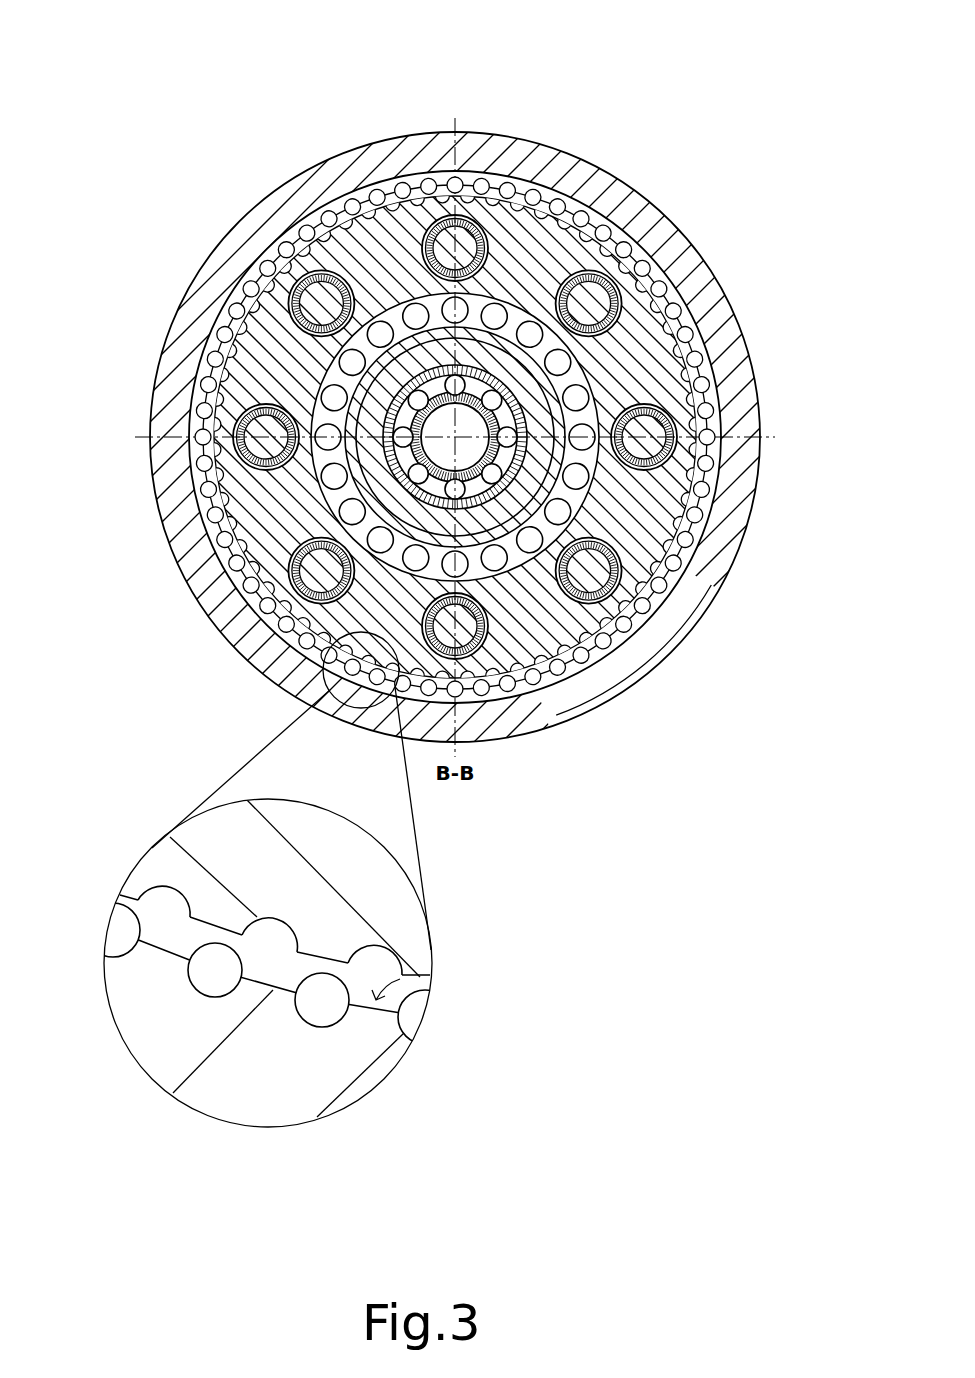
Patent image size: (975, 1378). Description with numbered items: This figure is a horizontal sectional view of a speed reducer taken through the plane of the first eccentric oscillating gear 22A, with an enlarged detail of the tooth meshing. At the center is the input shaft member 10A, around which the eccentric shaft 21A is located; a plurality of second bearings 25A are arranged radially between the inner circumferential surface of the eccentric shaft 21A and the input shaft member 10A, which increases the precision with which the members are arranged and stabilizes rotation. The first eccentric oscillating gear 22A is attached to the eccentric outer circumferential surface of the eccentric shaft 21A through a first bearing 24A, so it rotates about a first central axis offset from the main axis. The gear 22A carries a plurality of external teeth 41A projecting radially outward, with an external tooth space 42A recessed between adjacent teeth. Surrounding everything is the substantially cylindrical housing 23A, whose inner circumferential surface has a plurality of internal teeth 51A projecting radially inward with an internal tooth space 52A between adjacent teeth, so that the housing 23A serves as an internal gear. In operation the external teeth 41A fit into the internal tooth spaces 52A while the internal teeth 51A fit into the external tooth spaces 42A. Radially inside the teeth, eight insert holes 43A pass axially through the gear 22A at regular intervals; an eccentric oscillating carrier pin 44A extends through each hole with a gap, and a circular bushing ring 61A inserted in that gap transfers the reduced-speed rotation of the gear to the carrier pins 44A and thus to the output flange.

The input shaft member 10A is at (438, 420).
The eccentric shaft 21A is at (528, 400).
The first eccentric oscillating gear 22A is at (212, 840).
The housing 23A is at (535, 168).
The first bearing 24A is at (265, 553).
The second bearings 25A is at (560, 528).
The external teeth 41A is at (150, 947).
The external tooth space 42A is at (170, 887).
The insert holes 43A is at (593, 262).
The eccentric oscillating carrier pin 44A is at (313, 293).
The internal teeth 51A is at (322, 1000).
The internal tooth space 52A is at (425, 1000).
The bushing ring 61A is at (265, 392).